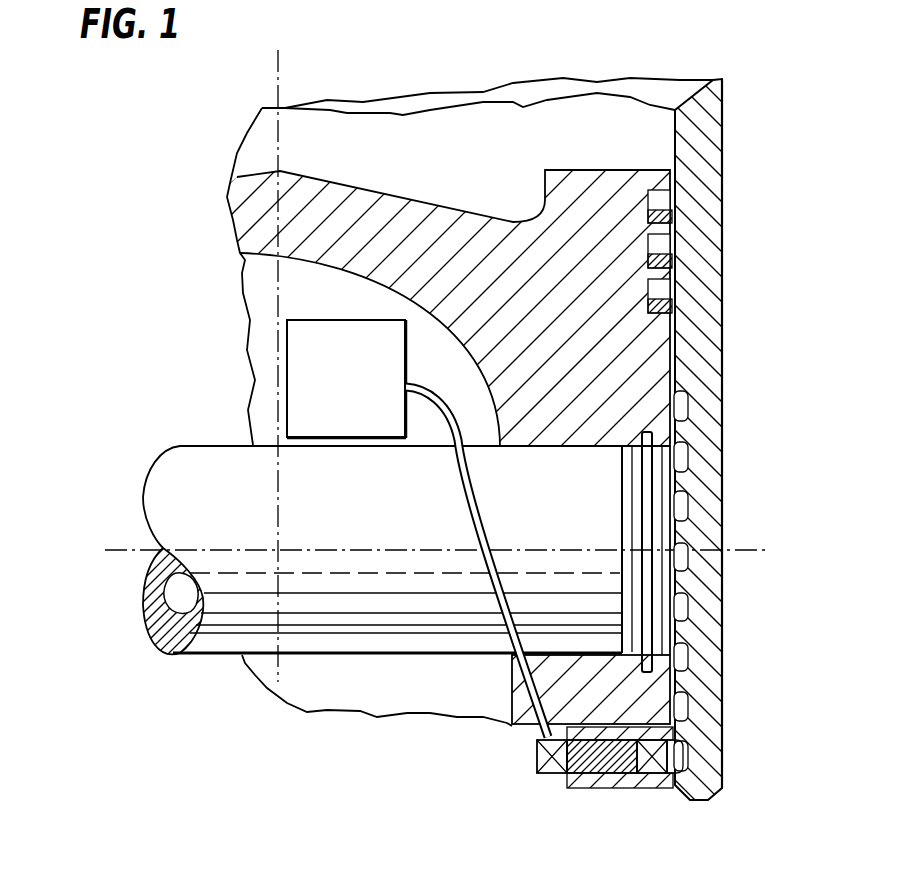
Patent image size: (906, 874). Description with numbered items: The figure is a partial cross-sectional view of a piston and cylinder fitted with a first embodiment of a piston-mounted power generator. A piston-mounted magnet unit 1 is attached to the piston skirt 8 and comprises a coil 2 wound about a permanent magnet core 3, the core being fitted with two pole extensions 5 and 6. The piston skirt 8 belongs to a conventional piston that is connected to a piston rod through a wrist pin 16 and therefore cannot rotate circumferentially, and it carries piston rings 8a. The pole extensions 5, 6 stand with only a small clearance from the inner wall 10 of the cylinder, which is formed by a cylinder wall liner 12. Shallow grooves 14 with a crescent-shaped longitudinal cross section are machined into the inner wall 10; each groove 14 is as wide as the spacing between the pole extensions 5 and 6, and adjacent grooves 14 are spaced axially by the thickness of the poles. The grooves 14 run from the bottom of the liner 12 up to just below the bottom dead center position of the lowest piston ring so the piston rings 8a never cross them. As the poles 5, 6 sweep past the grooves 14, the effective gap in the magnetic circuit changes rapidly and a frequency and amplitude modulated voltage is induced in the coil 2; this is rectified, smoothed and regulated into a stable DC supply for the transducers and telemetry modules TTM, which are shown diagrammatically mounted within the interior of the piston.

The piston-mounted magnet unit 1 is at (582, 802).
The coil 2 is at (548, 775).
The permanent magnet core 3 is at (607, 765).
The pole extension 5 is at (630, 788).
The pole extension 6 is at (650, 767).
The piston skirt 8 is at (530, 717).
The piston rings 8a is at (646, 295).
The inner wall 10 is at (670, 127).
The cylinder wall liner 12 is at (722, 776).
The shallow grooves 14 is at (688, 612).
The wrist pin 16 is at (213, 645).
The transducers and telemetry modules TTM is at (300, 320).